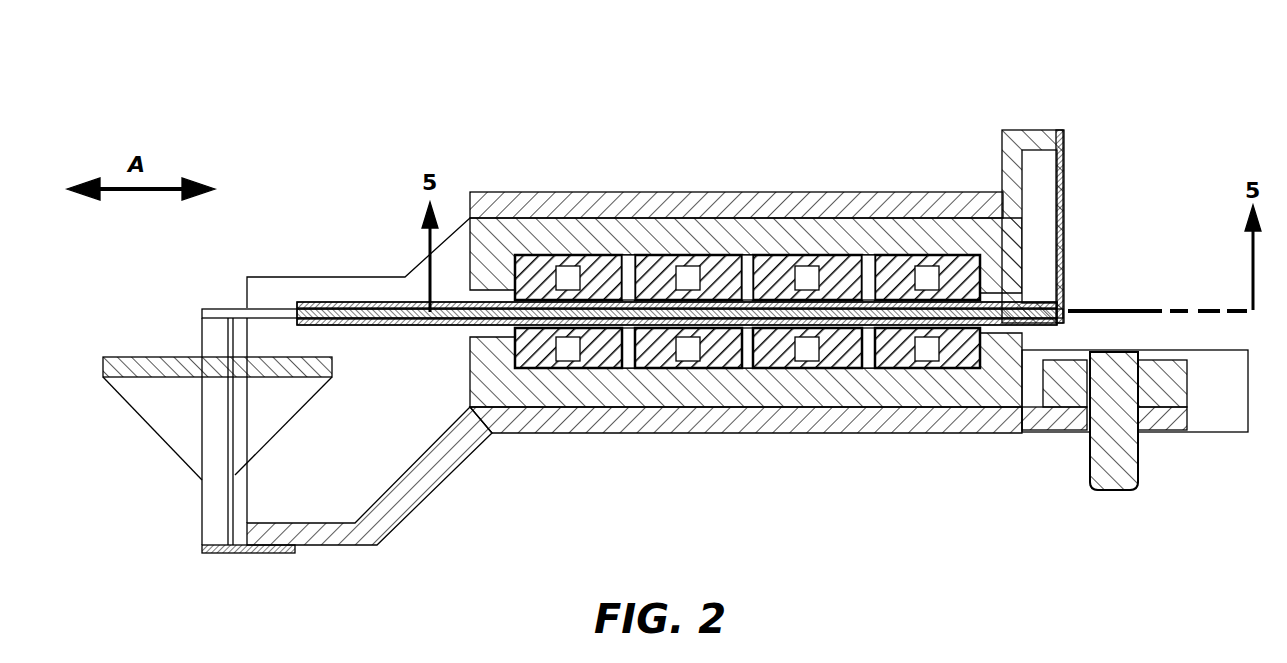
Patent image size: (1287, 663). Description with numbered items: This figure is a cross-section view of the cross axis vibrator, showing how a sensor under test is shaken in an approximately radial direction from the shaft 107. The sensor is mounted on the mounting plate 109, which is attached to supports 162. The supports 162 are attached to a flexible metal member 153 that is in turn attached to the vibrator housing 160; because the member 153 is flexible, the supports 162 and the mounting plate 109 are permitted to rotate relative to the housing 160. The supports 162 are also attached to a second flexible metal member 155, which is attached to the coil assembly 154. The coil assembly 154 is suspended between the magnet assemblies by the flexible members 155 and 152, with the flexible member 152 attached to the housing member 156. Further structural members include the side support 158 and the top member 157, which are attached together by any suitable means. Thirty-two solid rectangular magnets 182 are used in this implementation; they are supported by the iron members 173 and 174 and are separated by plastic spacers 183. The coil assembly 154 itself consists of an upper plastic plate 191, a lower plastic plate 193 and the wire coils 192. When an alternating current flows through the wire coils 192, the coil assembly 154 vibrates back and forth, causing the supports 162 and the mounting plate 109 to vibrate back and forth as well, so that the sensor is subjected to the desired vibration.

The shaft 107 is at (1117, 460).
The mounting plate 109 is at (172, 357).
The flexible member 152 is at (1062, 195).
The flexible metal member 153 is at (242, 553).
The coil assembly 154 is at (418, 318).
The flexible metal member 155 is at (262, 307).
The housing member 156 is at (1003, 137).
The top member 157 is at (542, 205).
The side support 158 is at (368, 380).
The vibrator housing 160 is at (492, 505).
The supports 162 is at (212, 395).
The iron member 173 is at (748, 235).
The iron member 174 is at (877, 387).
The solid rectangular magnets 182 is at (903, 253).
The plastic spacers 183 is at (747, 353).
The upper plastic plate 191 is at (1000, 310).
The wire coils 192 is at (628, 295).
The lower plastic plate 193 is at (1003, 337).